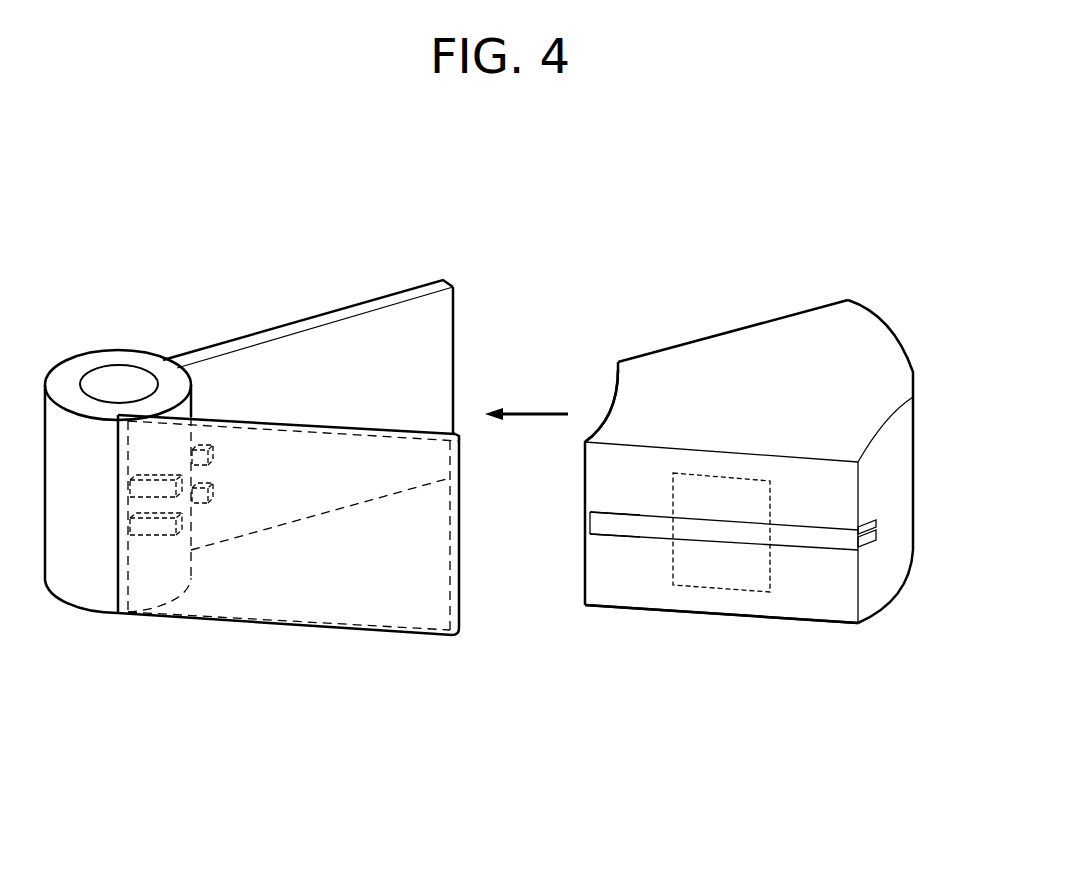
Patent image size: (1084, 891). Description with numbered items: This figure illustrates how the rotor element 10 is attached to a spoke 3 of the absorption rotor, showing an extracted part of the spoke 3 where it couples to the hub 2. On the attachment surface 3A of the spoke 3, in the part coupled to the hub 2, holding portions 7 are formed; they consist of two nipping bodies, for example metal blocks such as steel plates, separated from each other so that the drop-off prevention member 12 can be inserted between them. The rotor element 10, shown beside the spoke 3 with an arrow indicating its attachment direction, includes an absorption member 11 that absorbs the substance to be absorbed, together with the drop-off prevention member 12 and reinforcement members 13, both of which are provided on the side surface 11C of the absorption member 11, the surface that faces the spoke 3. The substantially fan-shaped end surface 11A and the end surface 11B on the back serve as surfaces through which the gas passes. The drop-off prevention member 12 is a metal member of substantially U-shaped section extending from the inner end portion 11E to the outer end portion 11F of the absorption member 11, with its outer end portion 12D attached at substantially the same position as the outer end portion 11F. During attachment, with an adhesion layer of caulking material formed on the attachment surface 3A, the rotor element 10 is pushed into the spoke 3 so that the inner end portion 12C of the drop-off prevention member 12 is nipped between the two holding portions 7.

The hub 2 is at (93, 362).
The spoke 3 is at (365, 302).
The attachment surface 3A is at (426, 318).
The holding portions 7 is at (212, 490).
The rotor element 10 is at (833, 178).
The absorption member 11 is at (780, 336).
The end surface 11A is at (697, 323).
The end surface 11B is at (806, 645).
The side surface 11C is at (760, 603).
The inner end portion 11E is at (597, 382).
The outer end portion 11F is at (907, 342).
The drop-off prevention member 12 is at (665, 532).
The inner end portion 12C is at (601, 525).
The outer end portion 12D is at (832, 542).
The reinforcement members 13 is at (737, 507).